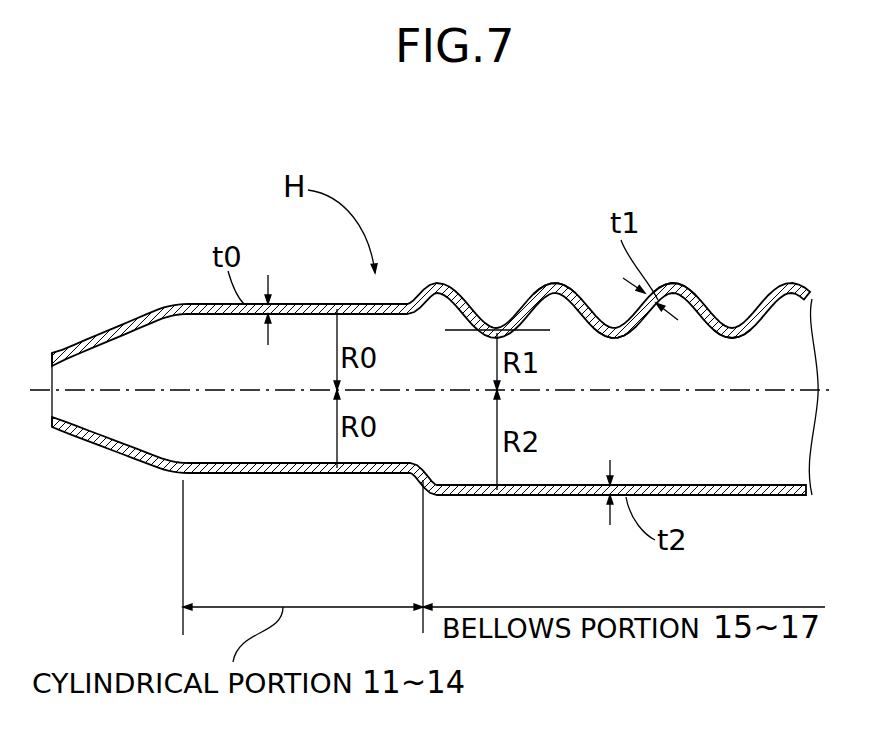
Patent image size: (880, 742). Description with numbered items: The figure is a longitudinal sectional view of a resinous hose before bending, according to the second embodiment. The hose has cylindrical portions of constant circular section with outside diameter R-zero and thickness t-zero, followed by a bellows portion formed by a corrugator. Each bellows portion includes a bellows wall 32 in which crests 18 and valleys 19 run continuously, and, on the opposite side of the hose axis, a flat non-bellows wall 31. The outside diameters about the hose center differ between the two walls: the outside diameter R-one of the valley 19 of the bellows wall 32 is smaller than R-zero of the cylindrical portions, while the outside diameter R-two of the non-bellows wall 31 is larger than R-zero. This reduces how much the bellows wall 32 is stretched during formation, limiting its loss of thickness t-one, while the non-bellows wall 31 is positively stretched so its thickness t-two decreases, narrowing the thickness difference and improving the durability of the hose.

The crest 18 is at (552, 287).
The valley 19 is at (612, 341).
The non-bellows wall 31 is at (730, 497).
The bellows wall 32 is at (712, 300).